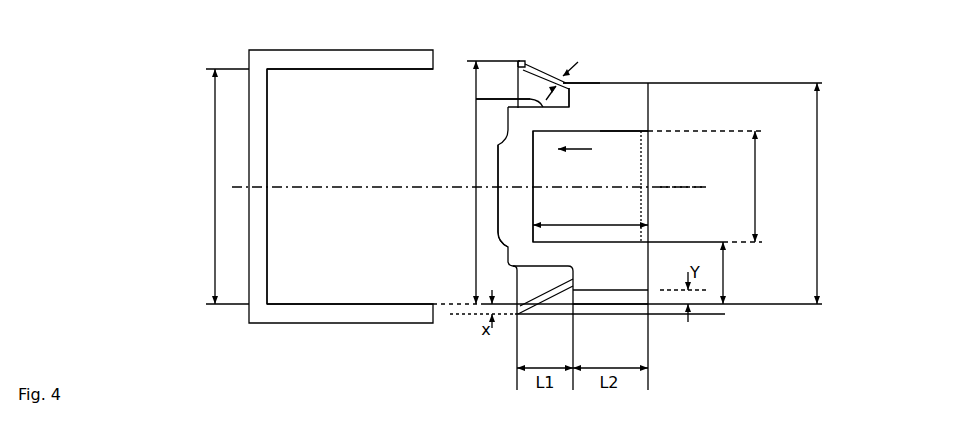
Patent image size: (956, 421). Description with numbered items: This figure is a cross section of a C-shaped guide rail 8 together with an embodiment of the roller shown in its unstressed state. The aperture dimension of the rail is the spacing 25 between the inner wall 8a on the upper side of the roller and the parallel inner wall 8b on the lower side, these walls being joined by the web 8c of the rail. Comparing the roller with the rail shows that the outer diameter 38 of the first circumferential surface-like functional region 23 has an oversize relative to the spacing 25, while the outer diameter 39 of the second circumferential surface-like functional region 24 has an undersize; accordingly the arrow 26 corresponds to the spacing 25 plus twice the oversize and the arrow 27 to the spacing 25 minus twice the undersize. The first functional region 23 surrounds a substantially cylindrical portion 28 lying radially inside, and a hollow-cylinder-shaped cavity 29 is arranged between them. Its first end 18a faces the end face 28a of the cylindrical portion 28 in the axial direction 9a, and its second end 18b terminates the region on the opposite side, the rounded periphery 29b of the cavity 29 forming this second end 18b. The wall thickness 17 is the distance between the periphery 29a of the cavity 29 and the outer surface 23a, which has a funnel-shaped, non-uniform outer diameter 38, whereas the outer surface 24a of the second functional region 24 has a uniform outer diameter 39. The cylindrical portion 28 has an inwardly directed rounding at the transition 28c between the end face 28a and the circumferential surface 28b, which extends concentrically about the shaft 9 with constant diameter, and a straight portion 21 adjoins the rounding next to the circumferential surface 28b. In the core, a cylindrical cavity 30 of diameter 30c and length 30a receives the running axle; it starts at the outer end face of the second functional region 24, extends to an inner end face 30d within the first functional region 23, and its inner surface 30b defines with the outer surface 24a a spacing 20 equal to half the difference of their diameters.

The guide rail 8 is at (295, 58).
The inner wall 8a is at (332, 70).
The inner wall 8b is at (348, 304).
The web of rail 8c is at (268, 230).
The shaft 9 is at (682, 187).
The axial direction 9a is at (590, 149).
The wall thickness 17 is at (567, 72).
The first end 18a is at (518, 63).
The second end 18b is at (580, 84).
The spacing 20 is at (723, 270).
The straight portion 21 is at (504, 247).
The first circumferential surface-like functional region 23 is at (517, 316).
The outer surface 23a is at (555, 300).
The second circumferential surface-like functional region 24 is at (610, 291).
The outer surface 24a is at (632, 292).
The spacing 25 is at (215, 175).
The spacing 26 is at (476, 197).
The spacing 27 is at (817, 175).
The portion of the roller 28 is at (500, 133).
The end face 28a is at (498, 168).
The circumferential surface 28b is at (476, 99).
The transition 28c is at (508, 266).
The cavity 29 is at (530, 90).
The periphery 29a is at (526, 64).
The periphery 29b is at (569, 99).
The cavity 30 is at (650, 203).
The length 30a is at (597, 225).
The inner surface 30b is at (646, 133).
The diameter 30c is at (755, 175).
The inner end face 30d is at (533, 170).
The outer diameter 38 is at (557, 72).
The outer diameter 39 is at (648, 83).